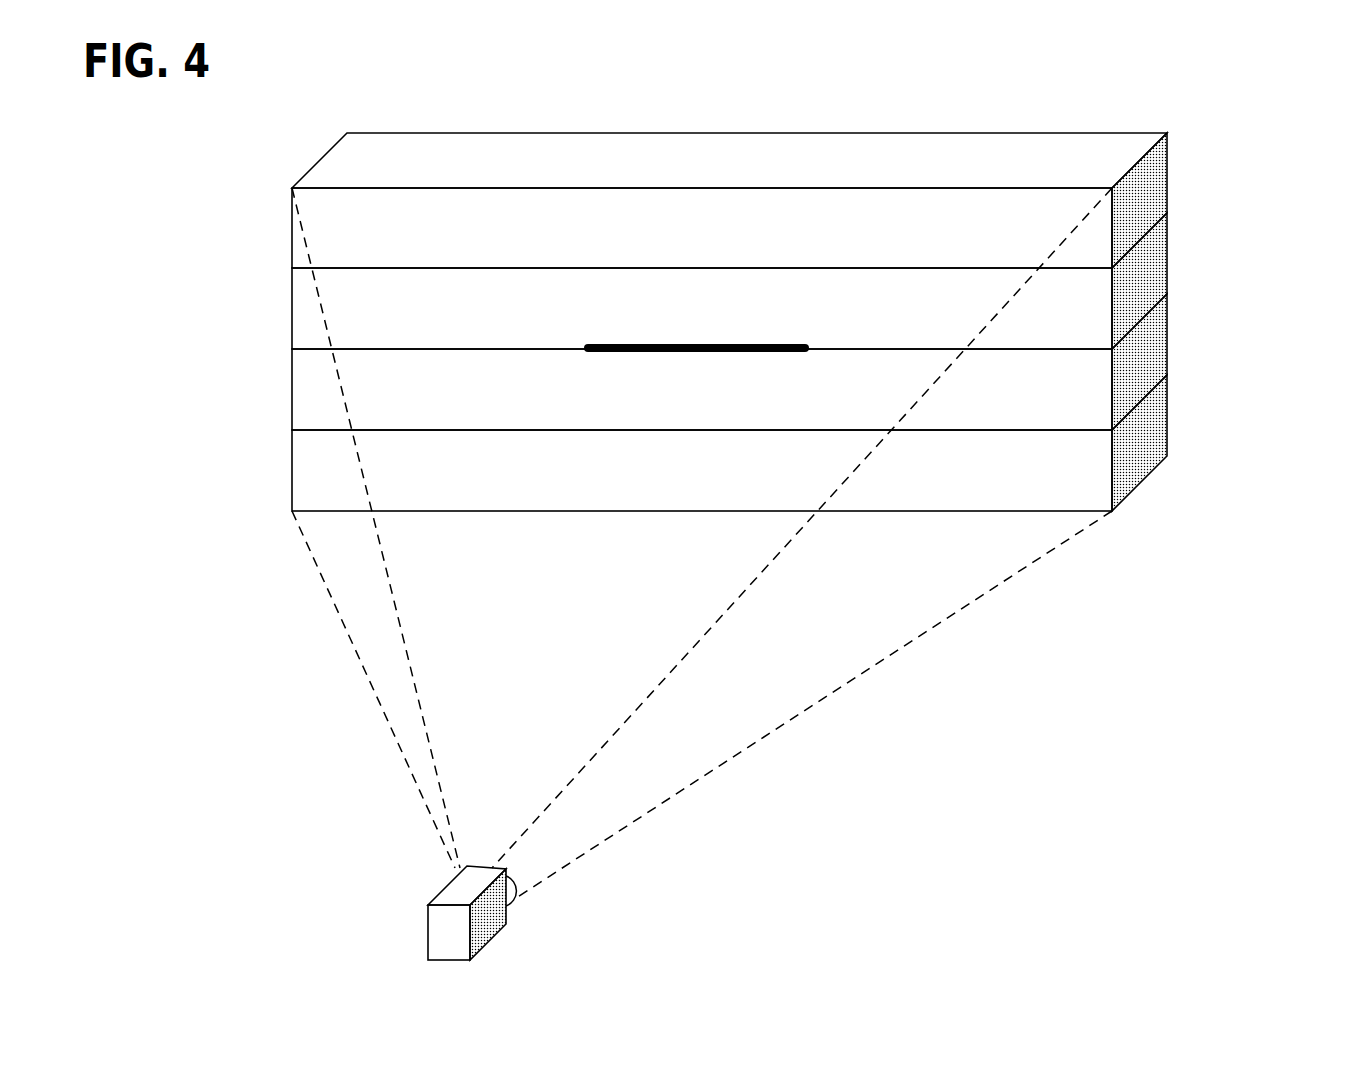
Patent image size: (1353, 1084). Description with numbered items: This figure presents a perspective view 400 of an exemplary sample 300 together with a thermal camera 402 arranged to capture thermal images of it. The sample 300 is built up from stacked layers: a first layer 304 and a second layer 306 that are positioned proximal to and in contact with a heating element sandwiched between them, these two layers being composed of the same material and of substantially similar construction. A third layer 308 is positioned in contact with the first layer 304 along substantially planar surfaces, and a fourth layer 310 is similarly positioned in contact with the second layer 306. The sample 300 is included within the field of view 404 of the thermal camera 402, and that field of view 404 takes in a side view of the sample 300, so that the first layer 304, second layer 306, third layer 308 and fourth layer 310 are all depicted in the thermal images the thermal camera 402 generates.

The perspective view 400 is at (1236, 74).
The sample 300 is at (315, 164).
The third layer 308 is at (1168, 168).
The first layer 304 is at (1168, 259).
The second layer 306 is at (1168, 336).
The fourth layer 310 is at (1168, 429).
The field of view 404 is at (397, 743).
The thermal camera 402 is at (428, 933).